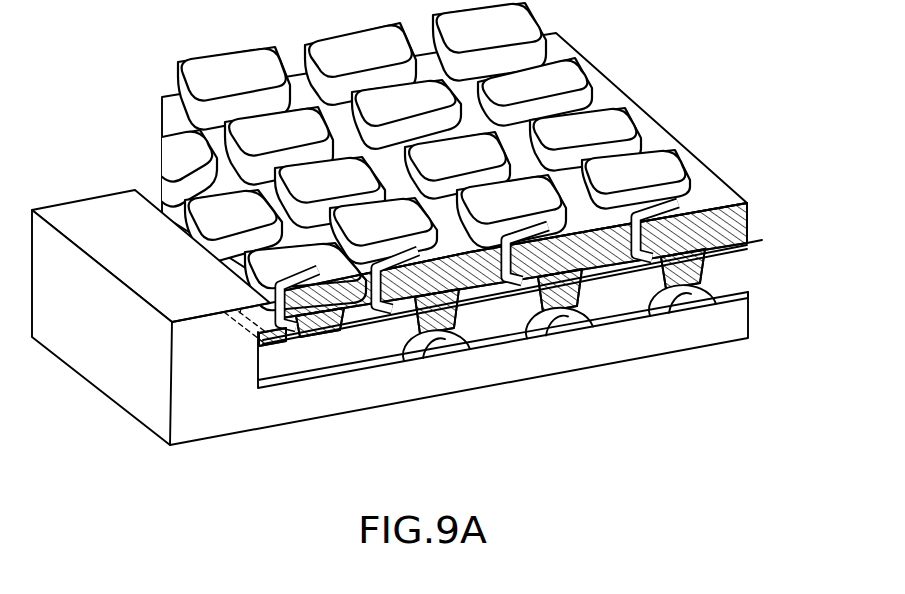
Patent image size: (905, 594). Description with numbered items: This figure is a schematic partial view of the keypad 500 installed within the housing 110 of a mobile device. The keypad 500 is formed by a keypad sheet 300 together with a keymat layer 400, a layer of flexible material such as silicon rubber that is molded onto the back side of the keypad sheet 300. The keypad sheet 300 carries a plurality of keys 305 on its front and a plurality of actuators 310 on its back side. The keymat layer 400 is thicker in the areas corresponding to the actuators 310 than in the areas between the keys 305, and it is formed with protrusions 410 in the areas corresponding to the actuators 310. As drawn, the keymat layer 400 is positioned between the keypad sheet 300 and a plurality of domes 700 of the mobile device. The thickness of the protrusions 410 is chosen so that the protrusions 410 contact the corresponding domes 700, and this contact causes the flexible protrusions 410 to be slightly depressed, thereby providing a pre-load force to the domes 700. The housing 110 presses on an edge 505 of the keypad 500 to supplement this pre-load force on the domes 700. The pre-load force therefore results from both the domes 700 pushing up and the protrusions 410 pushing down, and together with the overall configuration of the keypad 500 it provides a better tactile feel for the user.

The housing 110 is at (133, 382).
The keypad sheet 300 is at (458, 156).
The keys 305 is at (663, 155).
The actuators 310 is at (697, 236).
The keymat layer 400 is at (732, 250).
The protrusions 410 is at (449, 318).
The keypad 500 is at (160, 64).
The edge 505 is at (237, 320).
The domes 700 is at (437, 343).